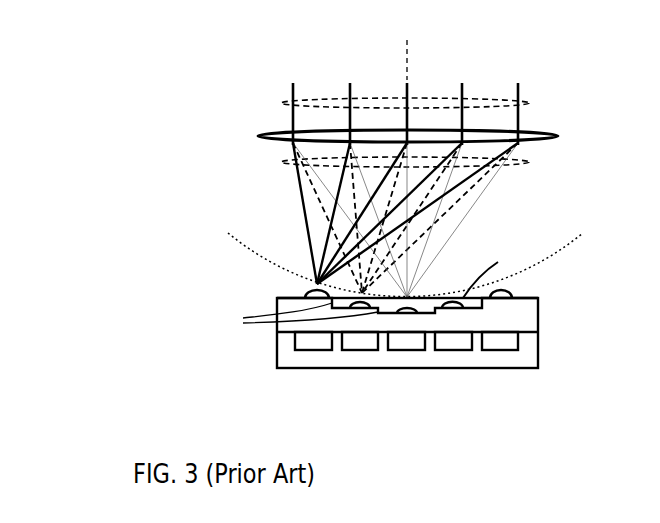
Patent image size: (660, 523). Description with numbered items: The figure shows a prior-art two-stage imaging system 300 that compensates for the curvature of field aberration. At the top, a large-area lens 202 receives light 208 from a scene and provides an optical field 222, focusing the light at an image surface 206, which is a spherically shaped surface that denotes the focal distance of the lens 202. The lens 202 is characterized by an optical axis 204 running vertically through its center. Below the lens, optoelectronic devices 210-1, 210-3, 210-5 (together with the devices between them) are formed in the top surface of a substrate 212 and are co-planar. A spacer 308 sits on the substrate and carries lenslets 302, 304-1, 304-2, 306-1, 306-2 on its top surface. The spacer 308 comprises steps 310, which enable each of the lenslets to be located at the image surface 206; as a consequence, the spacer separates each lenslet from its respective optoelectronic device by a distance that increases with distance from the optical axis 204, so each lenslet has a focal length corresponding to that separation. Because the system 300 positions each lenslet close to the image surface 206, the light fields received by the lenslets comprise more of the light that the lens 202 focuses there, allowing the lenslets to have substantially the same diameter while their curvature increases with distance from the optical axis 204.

The system 300 is at (182, 130).
The optical axis 204 is at (407, 75).
The light 208 is at (527, 103).
The lens 202 is at (558, 136).
The optical field 222 is at (527, 163).
The image surface 206 is at (576, 243).
The lenslet 304-1 is at (318, 281).
The lenslet 304-2 is at (498, 267).
The lenslet 302 is at (430, 303).
The lenslet 306-1 is at (307, 293).
The lenslet 306-2 is at (507, 292).
The steps 310 is at (291, 317).
The spacer 308 is at (538, 310).
The optoelectronic device 210-1 is at (315, 350).
The optoelectronic device 210-3 is at (407, 350).
The optoelectronic device 210-5 is at (500, 350).
The substrate 212 is at (513, 368).